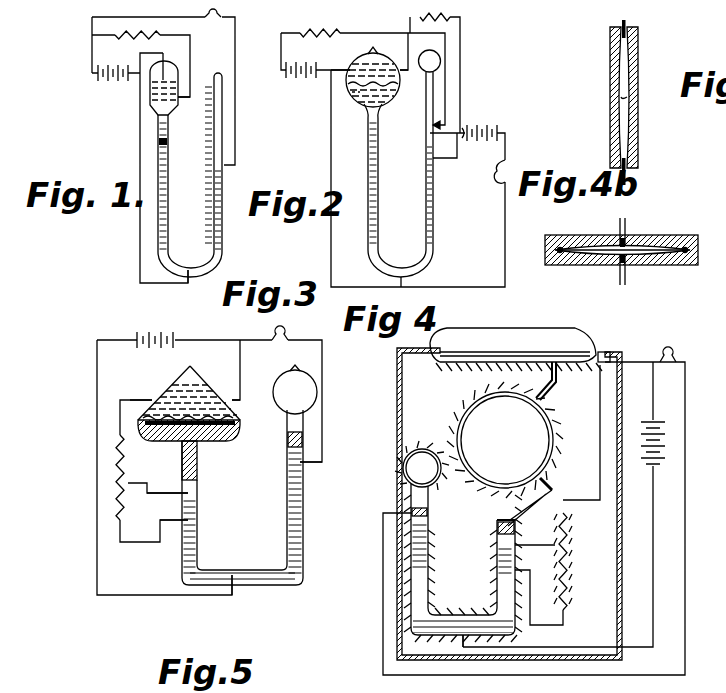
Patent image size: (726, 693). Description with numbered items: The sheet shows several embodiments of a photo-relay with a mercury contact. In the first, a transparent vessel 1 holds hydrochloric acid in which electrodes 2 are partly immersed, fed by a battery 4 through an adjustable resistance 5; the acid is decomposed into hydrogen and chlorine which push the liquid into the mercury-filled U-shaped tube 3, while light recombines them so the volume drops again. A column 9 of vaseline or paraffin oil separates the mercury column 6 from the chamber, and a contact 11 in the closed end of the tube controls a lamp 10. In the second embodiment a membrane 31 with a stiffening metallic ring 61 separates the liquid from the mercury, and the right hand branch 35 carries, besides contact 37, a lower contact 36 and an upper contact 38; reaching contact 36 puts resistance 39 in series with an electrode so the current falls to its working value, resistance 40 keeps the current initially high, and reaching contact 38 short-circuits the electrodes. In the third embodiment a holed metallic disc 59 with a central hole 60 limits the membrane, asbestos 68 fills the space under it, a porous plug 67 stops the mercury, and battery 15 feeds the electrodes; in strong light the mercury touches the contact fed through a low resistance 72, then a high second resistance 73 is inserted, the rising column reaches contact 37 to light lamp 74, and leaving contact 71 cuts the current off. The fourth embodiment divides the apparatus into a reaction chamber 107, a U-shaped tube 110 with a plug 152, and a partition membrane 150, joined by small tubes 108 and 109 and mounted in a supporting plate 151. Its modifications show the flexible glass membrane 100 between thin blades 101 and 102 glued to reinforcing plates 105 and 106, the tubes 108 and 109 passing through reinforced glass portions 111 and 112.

In FIG. 1, the vessel 1 is at (164, 76).
In FIG. 2, the vessel 1 is at (371, 49).
In FIG. 3, the vessel 1 is at (206, 373).
In FIG. 1, the electrode 2 is at (161, 75).
In FIG. 2, the electrode 2 is at (369, 58).
In FIG. 3, the electrode 2 is at (185, 389).
In FIG. 4, the electrode 2 is at (566, 376).
In FIG. 1, the U-shaped tube 3 is at (168, 201).
In FIG. 2, the U-shaped tube 3 is at (388, 272).
In FIG. 1, the battery 4 is at (112, 83).
In FIG. 2, the battery 4 is at (300, 80).
In FIG. 4, the battery 4 is at (564, 504).
In FIG. 1, the adjustable resistance 5 is at (137, 26).
In FIG. 1, the mercury column 6 is at (200, 276).
In FIG. 3, the mercury column 6 is at (299, 571).
In FIG. 4, the mercury column 6 is at (447, 619).
In FIG. 1, the column of vaseline 9 is at (157, 145).
In FIG. 1, the lamp 10 is at (214, 28).
In FIG. 2, the lamp 10 is at (498, 186).
In FIG. 4, the lamp 10 is at (680, 350).
In FIG. 1, the contact 11 is at (228, 172).
In FIG. 3, the battery 15 is at (170, 333).
In FIG. 2, the membrane 31 is at (350, 97).
In FIG. 2, the right hand side branch 35 is at (434, 268).
In FIG. 2, the lower contact 36 is at (444, 158).
In FIG. 2, the contact 37 is at (464, 130).
In FIG. 3, the contact 37 is at (318, 463).
In FIG. 4, the contact 37 is at (436, 516).
In FIG. 2, the upper contact 38 is at (433, 125).
In FIG. 3, the upper contact 38 is at (163, 501).
In FIG. 2, the resistance 39 is at (445, 25).
In FIG. 2, the resistance 40 is at (319, 22).
In FIG. 3, the metallic disc 59 is at (236, 428).
In FIG. 3, the hole 60 is at (222, 441).
In FIG. 2, the metallic ring 61 is at (387, 110).
In FIG. 3, the metallic ring 61 is at (295, 439).
In FIG. 3, the porous plug 67 is at (289, 441).
In FIG. 4, the porous plug 67 is at (435, 500).
In FIG. 3, the asbestos 68 is at (192, 462).
In FIG. 3, the contact 71 is at (174, 530).
In FIG. 3, the resistance 72 is at (134, 477).
In FIG. 4, the resistance 72 is at (570, 536).
In FIG. 3, the second resistance 73 is at (125, 490).
In FIG. 4, the second resistance 73 is at (570, 586).
In FIG. 3, the lamp 74 is at (295, 329).
In FIG. 4A, the membrane 100 is at (632, 91).
In FIG. 4B, the membrane 100 is at (603, 256).
In FIG. 4A, the thin blade 101 is at (612, 58).
In FIG. 4B, the thin blade 101 is at (668, 259).
In FIG. 4A, the thin blade 102 is at (632, 46).
In FIG. 4B, the thin blade 102 is at (593, 241).
In FIG. 4A, the plate 105 is at (612, 108).
In FIG. 4B, the plate 105 is at (555, 233).
In FIG. 4A, the plate 106 is at (638, 122).
In FIG. 4B, the plate 106 is at (556, 262).
In FIG. 4A, the reaction chamber 107 is at (606, 89).
In FIG. 4, the reaction chamber 107 is at (481, 336).
In FIG. 4A, the tube 108 is at (630, 22).
In FIG. 4B, the tube 108 is at (628, 233).
In FIG. 4, the tube 108 is at (552, 396).
In FIG. 4A, the tube 109 is at (628, 182).
In FIG. 4B, the tube 109 is at (628, 283).
In FIG. 4, the tube 109 is at (522, 500).
In FIG. 4, the U-shaped tube 110 is at (426, 580).
In FIG. 4B, the reinforced glass portion 111 is at (620, 266).
In FIG. 4B, the reinforced glass portion 112 is at (621, 230).
In FIG. 4, the partition membrane 150 is at (505, 440).
In FIG. 4, the supporting plate 151 is at (400, 408).
In FIG. 4, the plug 152 is at (497, 518).